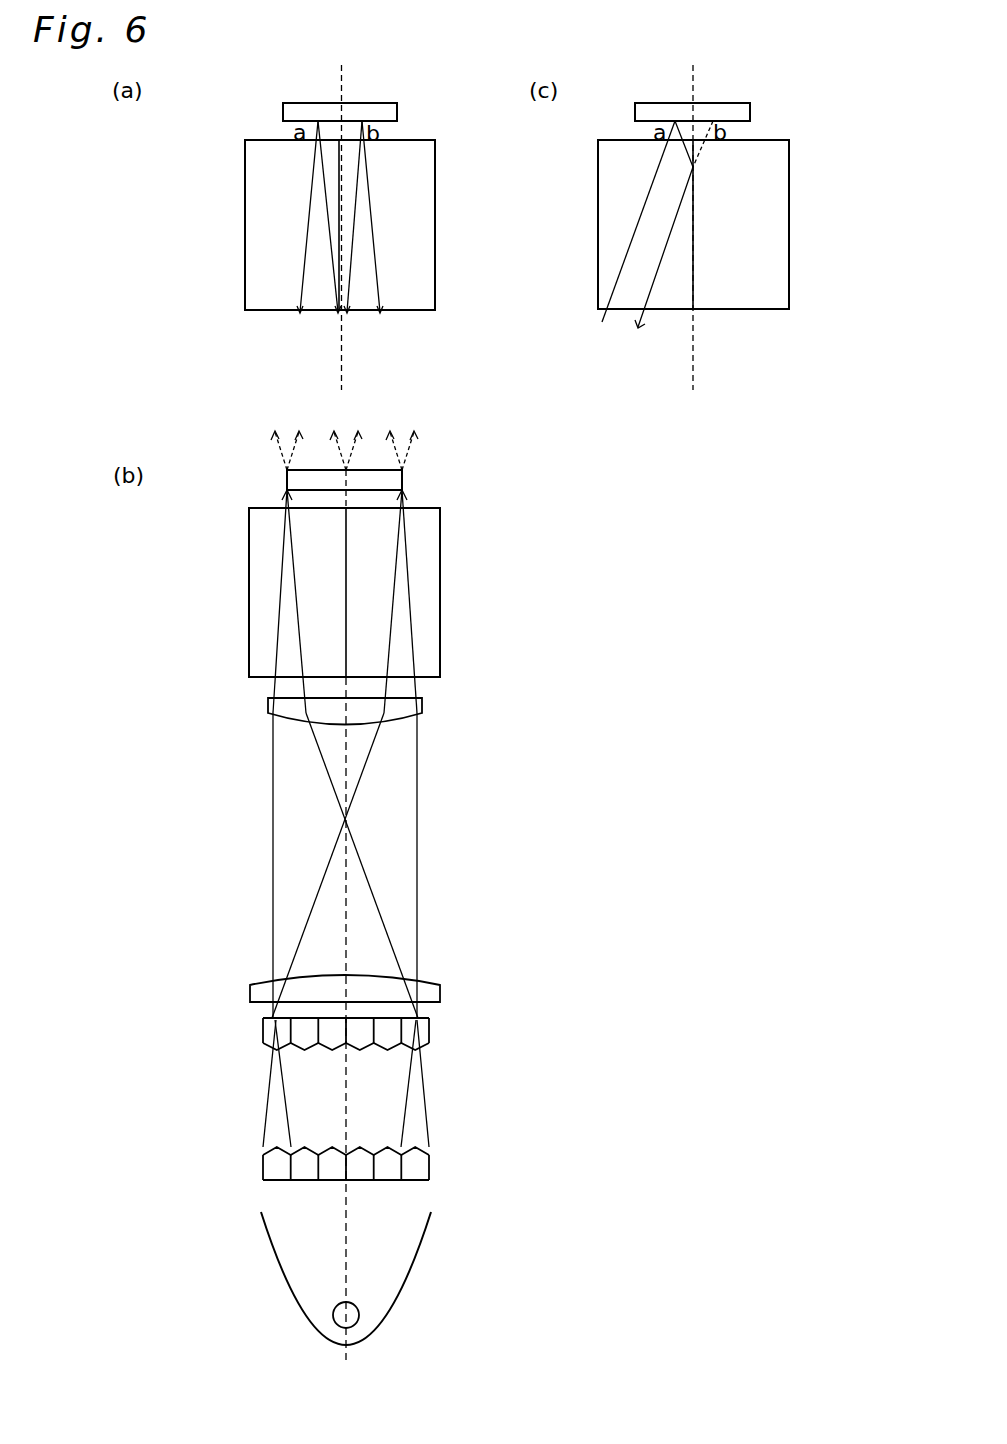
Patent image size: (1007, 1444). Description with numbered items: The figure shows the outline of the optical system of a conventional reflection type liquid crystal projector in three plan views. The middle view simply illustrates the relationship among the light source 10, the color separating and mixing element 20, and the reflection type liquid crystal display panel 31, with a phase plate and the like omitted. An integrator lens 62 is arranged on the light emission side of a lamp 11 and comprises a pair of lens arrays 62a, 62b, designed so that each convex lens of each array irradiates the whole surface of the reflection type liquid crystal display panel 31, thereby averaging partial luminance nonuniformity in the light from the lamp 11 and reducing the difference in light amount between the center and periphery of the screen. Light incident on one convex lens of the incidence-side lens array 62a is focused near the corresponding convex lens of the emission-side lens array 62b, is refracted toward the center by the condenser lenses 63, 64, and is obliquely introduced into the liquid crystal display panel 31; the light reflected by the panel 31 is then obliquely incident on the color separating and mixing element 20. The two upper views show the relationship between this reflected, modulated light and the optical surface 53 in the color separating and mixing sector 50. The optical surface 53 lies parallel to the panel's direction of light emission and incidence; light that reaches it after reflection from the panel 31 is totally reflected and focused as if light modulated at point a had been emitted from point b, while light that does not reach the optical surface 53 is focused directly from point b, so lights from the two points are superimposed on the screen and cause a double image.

The light source 10 is at (366, 1285).
The lamp 11 is at (425, 1269).
The color separating and mixing element 20 is at (518, 380).
The color separating and mixing sector 50 is at (424, 134).
The reflection type liquid crystal display panel 31 is at (298, 108).
The optical surface 53 is at (343, 298).
The integrator lens 62 is at (401, 1099).
The incidence-side lens array 62a is at (374, 1164).
The emission-side lens array 62b is at (425, 1031).
The condenser lens 63 is at (433, 982).
The condenser lens 64 is at (423, 710).